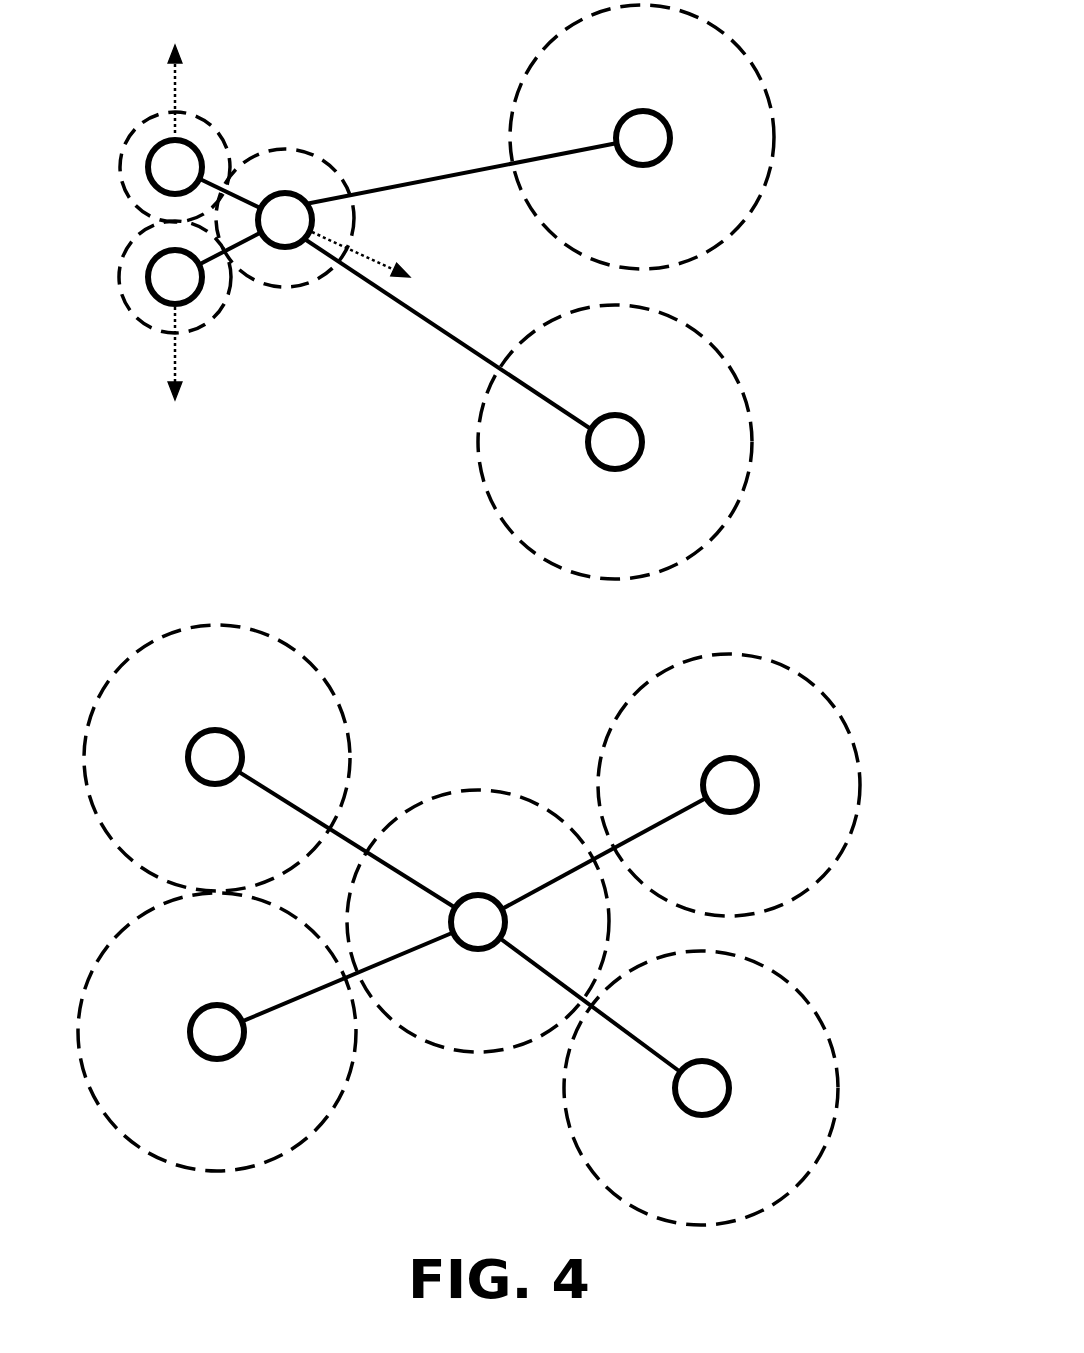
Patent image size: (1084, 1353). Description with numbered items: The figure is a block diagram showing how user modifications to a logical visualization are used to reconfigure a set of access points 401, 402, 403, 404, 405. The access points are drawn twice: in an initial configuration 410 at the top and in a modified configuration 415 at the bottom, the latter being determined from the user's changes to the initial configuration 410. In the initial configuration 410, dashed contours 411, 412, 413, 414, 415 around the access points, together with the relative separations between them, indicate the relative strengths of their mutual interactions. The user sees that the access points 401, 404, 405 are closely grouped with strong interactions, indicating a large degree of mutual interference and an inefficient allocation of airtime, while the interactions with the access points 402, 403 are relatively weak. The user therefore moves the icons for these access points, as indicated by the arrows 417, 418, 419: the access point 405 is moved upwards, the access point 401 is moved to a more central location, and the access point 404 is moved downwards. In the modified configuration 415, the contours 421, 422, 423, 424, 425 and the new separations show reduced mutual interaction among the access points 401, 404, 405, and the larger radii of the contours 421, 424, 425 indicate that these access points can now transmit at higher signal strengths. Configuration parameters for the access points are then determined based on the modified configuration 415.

The access point 401 is at (381, 571).
The access point 402 is at (686, 461).
The access point 403 is at (658, 765).
The access point 404 is at (196, 654).
The access point 405 is at (195, 462).
The initial configuration 410 is at (871, 48).
The contour 411 is at (317, 160).
The contour 412 is at (775, 137).
The contour 413 is at (753, 443).
The contour 414 is at (200, 323).
The modified configuration 415 is at (212, 126).
The arrow 417 is at (172, 80).
The arrow 418 is at (363, 253).
The arrow 419 is at (173, 360).
The contour 421 is at (472, 790).
The contour 422 is at (862, 782).
The contour 423 is at (837, 1045).
The contour 424 is at (83, 993).
The contour 425 is at (97, 705).